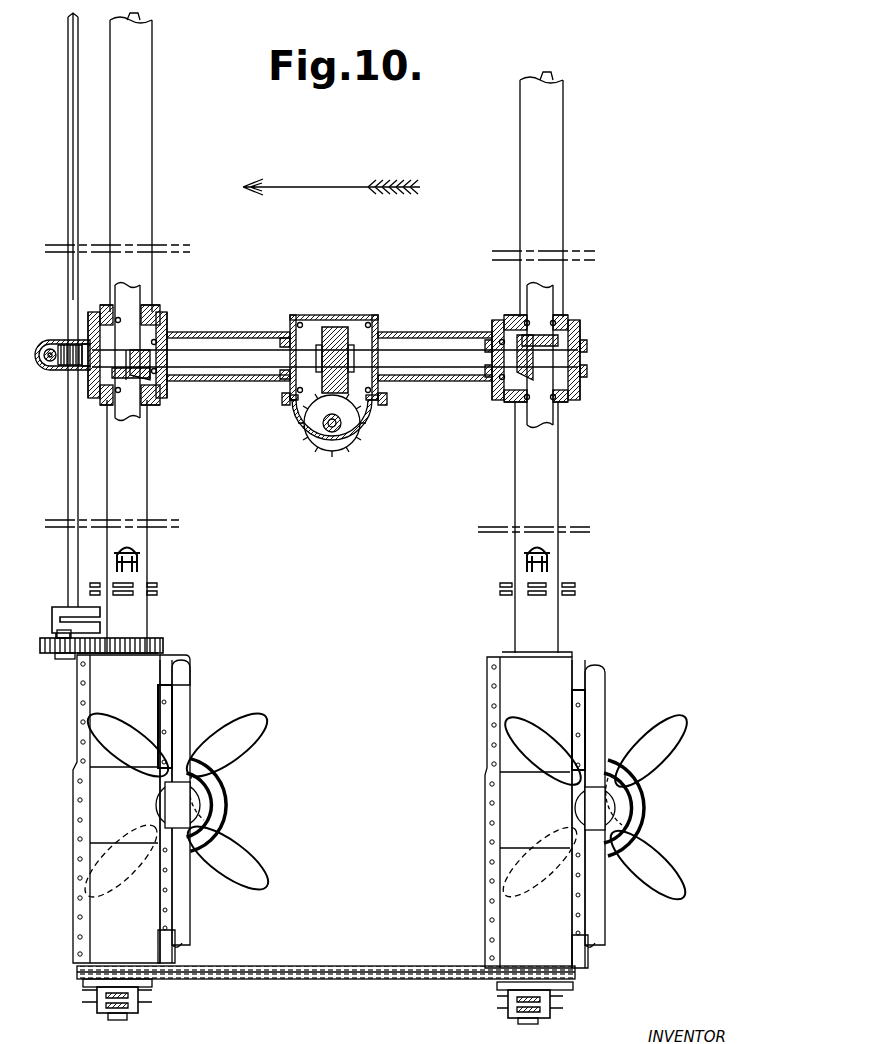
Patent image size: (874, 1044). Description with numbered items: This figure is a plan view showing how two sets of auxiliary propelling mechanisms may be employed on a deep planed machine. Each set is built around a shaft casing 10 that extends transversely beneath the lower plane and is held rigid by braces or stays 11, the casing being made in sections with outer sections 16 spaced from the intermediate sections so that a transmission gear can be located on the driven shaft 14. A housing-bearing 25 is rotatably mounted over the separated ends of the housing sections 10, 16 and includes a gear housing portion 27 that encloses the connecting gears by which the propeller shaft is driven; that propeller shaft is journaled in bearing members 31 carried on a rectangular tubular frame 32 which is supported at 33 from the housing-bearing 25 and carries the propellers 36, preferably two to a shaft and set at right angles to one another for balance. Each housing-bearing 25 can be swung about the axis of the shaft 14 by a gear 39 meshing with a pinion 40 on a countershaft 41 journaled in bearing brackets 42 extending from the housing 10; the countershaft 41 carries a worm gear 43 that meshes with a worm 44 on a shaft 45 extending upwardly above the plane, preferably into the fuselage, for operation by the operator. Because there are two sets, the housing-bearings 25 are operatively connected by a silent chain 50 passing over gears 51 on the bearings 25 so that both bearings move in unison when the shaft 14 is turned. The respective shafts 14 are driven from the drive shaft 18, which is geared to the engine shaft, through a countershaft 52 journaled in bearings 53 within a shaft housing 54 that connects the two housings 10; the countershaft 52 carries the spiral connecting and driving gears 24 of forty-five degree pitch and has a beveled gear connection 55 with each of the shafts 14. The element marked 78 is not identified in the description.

The shaft casing 10 is at (140, 490).
The braces or stays 11 is at (136, 580).
The shaft 14 is at (128, 300).
The outer sections 16 is at (72, 992).
The driving shaft 18 is at (340, 455).
The gears 24 is at (340, 325).
The housing-bearing 25 is at (322, 810).
The gear housing portion 27 is at (216, 803).
The bearing members 31 is at (616, 876).
The rectangular tubular frame 32 is at (186, 703).
The support 33 is at (180, 955).
The propellers 36 is at (666, 728).
The gear 39 is at (155, 645).
The pinion 40 is at (40, 645).
The countershaft 41 is at (68, 478).
The bearing brackets 42 is at (62, 608).
The worm gear 43 is at (60, 370).
The worm 44 is at (42, 367).
The shaft 45 is at (45, 340).
The silent chain 50 is at (322, 980).
The gears 51 is at (152, 982).
The countershaft 52 is at (440, 353).
The bearings 53 is at (283, 338).
The shaft housing 54 is at (248, 333).
The beveled gear connection 55 is at (162, 333).
The pin 78 is at (42, 353).